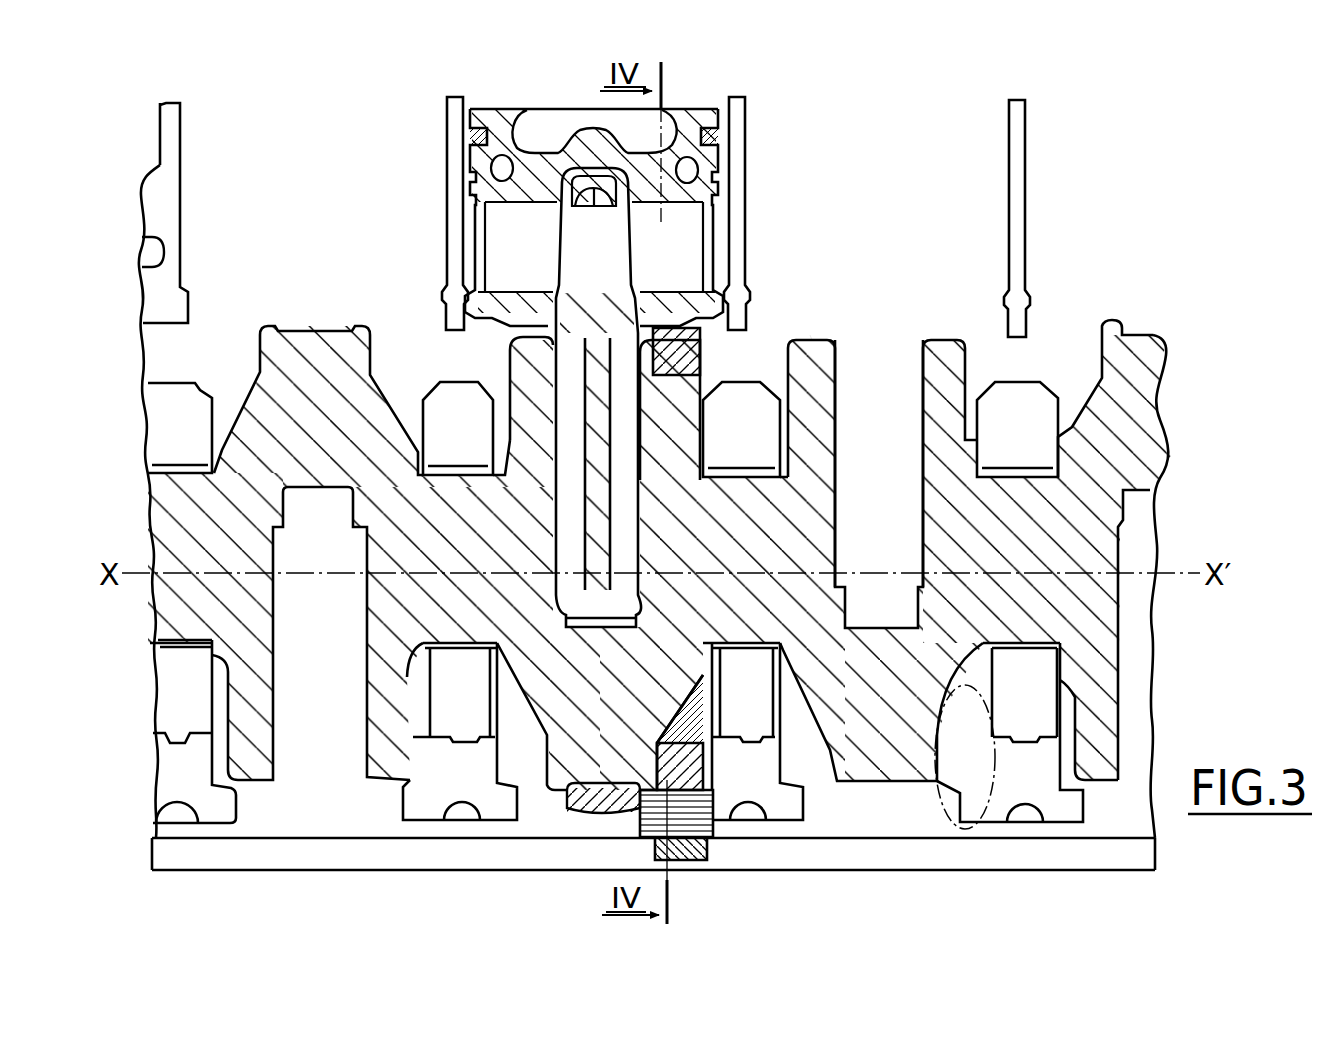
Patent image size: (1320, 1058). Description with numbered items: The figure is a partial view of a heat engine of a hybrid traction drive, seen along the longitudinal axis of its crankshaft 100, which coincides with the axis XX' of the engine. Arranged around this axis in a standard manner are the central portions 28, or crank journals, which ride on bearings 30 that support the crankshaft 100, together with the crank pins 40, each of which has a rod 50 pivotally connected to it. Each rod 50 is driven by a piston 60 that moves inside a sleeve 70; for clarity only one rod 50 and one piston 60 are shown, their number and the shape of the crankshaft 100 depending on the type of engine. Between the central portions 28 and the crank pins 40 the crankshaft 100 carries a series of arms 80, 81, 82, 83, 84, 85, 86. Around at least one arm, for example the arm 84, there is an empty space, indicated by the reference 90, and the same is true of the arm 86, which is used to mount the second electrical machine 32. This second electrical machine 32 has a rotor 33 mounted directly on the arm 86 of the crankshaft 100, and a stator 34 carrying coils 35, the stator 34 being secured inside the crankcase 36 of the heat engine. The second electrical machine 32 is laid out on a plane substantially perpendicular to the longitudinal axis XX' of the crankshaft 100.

The central portions 28 is at (488, 556).
The bearings 30 is at (195, 438).
The second electrical machine 32 is at (778, 286).
The rotor 33 is at (688, 358).
The stator 34 is at (700, 862).
The coils 35 is at (713, 800).
The crankcase 36 is at (853, 847).
The crank pins 40 is at (598, 713).
The rod 50 is at (603, 386).
The piston 60 is at (692, 270).
The sleeve 70 is at (736, 228).
The arm 80 is at (258, 757).
The arm 81 is at (389, 756).
The arm 82 is at (523, 388).
The arm 83 is at (818, 395).
The arm 84 is at (940, 378).
The arm 85 is at (1104, 767).
The arm 86 is at (662, 395).
The empty space 90 is at (937, 800).
The crankshaft 100 is at (823, 331).